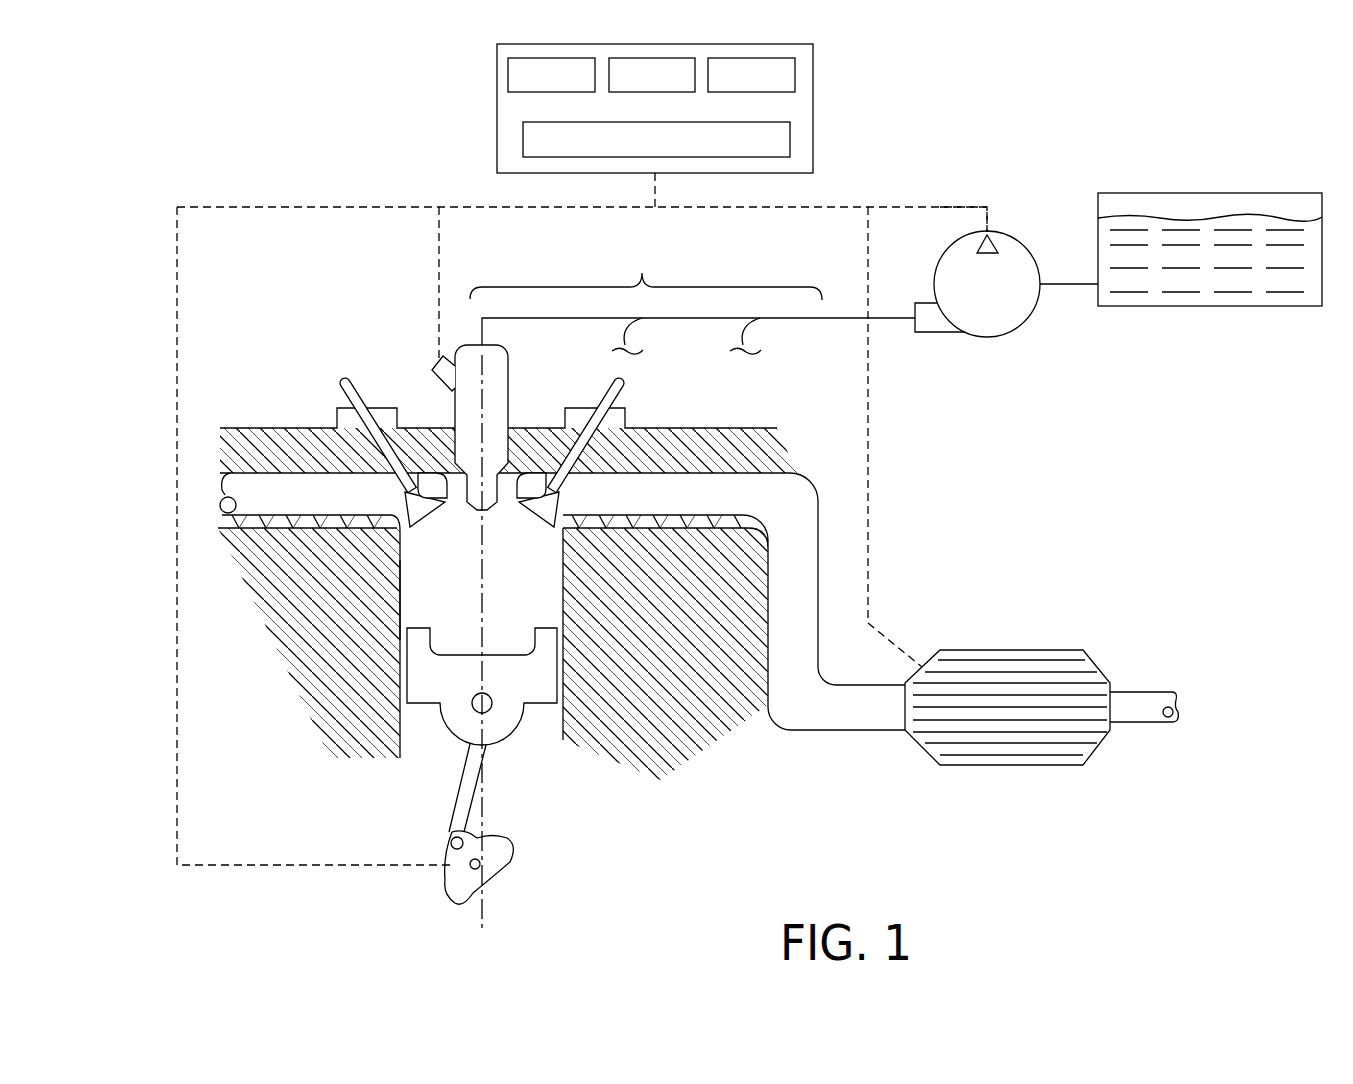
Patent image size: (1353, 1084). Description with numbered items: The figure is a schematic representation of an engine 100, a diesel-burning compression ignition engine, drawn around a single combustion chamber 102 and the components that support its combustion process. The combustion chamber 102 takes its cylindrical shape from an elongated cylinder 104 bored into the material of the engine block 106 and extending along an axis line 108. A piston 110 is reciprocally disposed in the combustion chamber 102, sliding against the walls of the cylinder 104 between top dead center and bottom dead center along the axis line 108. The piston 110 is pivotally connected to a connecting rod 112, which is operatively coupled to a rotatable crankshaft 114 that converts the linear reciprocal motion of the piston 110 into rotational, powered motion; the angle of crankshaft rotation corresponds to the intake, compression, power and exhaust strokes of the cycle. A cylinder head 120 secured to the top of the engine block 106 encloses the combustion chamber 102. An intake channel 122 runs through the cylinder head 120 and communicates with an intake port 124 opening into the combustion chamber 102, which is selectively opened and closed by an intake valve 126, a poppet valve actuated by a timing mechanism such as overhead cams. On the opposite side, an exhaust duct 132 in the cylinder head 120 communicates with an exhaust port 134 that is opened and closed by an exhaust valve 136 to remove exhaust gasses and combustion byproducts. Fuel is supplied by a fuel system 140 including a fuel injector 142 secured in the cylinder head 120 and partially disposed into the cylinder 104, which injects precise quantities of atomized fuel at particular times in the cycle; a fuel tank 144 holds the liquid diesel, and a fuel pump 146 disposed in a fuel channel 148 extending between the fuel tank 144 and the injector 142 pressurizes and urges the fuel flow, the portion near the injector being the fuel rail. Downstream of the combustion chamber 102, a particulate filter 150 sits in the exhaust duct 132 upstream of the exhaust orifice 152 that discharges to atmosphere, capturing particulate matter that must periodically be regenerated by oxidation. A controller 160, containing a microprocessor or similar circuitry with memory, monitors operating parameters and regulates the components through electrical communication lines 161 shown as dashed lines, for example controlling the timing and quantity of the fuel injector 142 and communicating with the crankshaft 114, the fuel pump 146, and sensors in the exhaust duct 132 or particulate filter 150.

The engine 100 is at (303, 320).
The combustion chamber 102 is at (532, 610).
The cylinder 104 is at (400, 577).
The engine block 106 is at (315, 592).
The axis line 108 is at (482, 815).
The piston 110 is at (512, 693).
The connecting rod 112 is at (461, 793).
The crankshaft 114 is at (493, 858).
The cylinder head 120 is at (254, 450).
The intake channel 122 is at (253, 493).
The intake port 124 is at (420, 470).
The intake valve 126 is at (400, 500).
The exhaust duct 132 is at (806, 484).
The exhaust port 134 is at (534, 470).
The exhaust valve 136 is at (557, 502).
The fuel system 140 is at (646, 296).
The fuel injector 142 is at (468, 356).
The fuel tank 144 is at (1180, 208).
The fuel pump 146 is at (1012, 313).
The fuel channel 148 is at (885, 318).
The particulate filter 150 is at (993, 648).
The exhaust orifice 152 is at (1180, 713).
The controller 160 is at (813, 107).
The electrical communication lines 161 is at (952, 207).